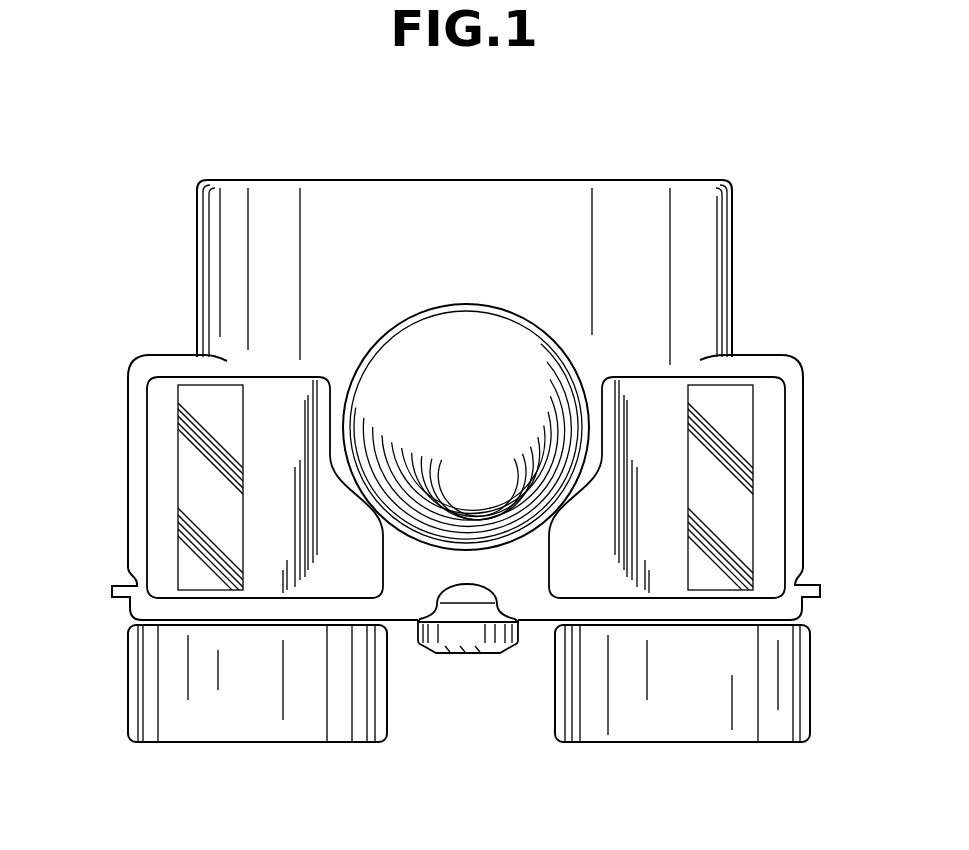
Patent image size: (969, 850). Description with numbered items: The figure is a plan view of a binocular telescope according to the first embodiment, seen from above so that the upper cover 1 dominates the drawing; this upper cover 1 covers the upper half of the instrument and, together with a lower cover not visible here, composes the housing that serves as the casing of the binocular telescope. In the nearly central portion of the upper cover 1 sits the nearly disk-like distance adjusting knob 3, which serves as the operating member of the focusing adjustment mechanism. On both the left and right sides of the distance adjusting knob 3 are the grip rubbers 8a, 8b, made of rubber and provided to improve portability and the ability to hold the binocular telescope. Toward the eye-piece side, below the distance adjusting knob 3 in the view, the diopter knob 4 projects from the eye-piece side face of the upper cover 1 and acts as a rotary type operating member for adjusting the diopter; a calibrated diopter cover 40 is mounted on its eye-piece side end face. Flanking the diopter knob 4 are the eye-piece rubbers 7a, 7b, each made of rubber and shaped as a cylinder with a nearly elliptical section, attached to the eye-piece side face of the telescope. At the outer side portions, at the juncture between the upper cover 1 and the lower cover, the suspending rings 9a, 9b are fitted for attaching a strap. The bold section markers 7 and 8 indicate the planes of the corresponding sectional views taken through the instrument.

The upper cover 1 is at (717, 258).
The distance adjusting knob 3 is at (422, 332).
The diopter knob 4 is at (460, 660).
The calibrated diopter cover 40 is at (452, 657).
The eye-piece rubber 7a is at (780, 690).
The eye-piece rubber 7b is at (138, 713).
The grip rubber 8a is at (770, 483).
The grip rubber 8b is at (157, 492).
The suspending ring 9a is at (820, 582).
The suspending ring 9b is at (117, 600).
The section line 7- 7 is at (118, 416).
The section line 8- 8 is at (463, 172).